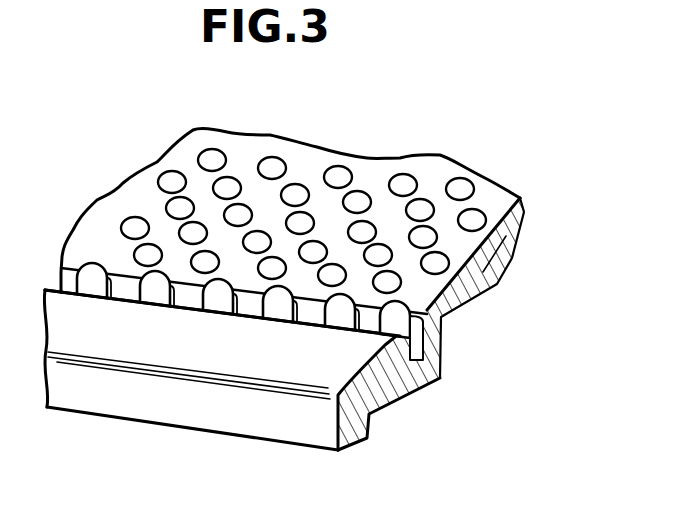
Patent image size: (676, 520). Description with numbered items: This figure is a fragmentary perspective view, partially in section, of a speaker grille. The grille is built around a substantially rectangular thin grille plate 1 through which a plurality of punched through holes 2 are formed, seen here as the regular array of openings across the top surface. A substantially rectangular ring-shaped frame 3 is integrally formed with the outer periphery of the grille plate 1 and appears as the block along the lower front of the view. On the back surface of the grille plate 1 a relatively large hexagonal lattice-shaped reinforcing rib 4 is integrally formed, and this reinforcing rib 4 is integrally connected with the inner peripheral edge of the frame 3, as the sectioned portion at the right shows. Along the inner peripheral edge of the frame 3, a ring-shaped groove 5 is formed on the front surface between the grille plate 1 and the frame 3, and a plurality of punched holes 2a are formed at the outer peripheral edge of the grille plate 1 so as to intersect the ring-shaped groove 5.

The grille plate 1 is at (296, 293).
The punched holes 2 is at (472, 220).
The punched holes 2a is at (397, 328).
The frame 3 is at (153, 400).
The reinforcing rib 4 is at (485, 280).
The ring-shaped groove 5 is at (310, 313).